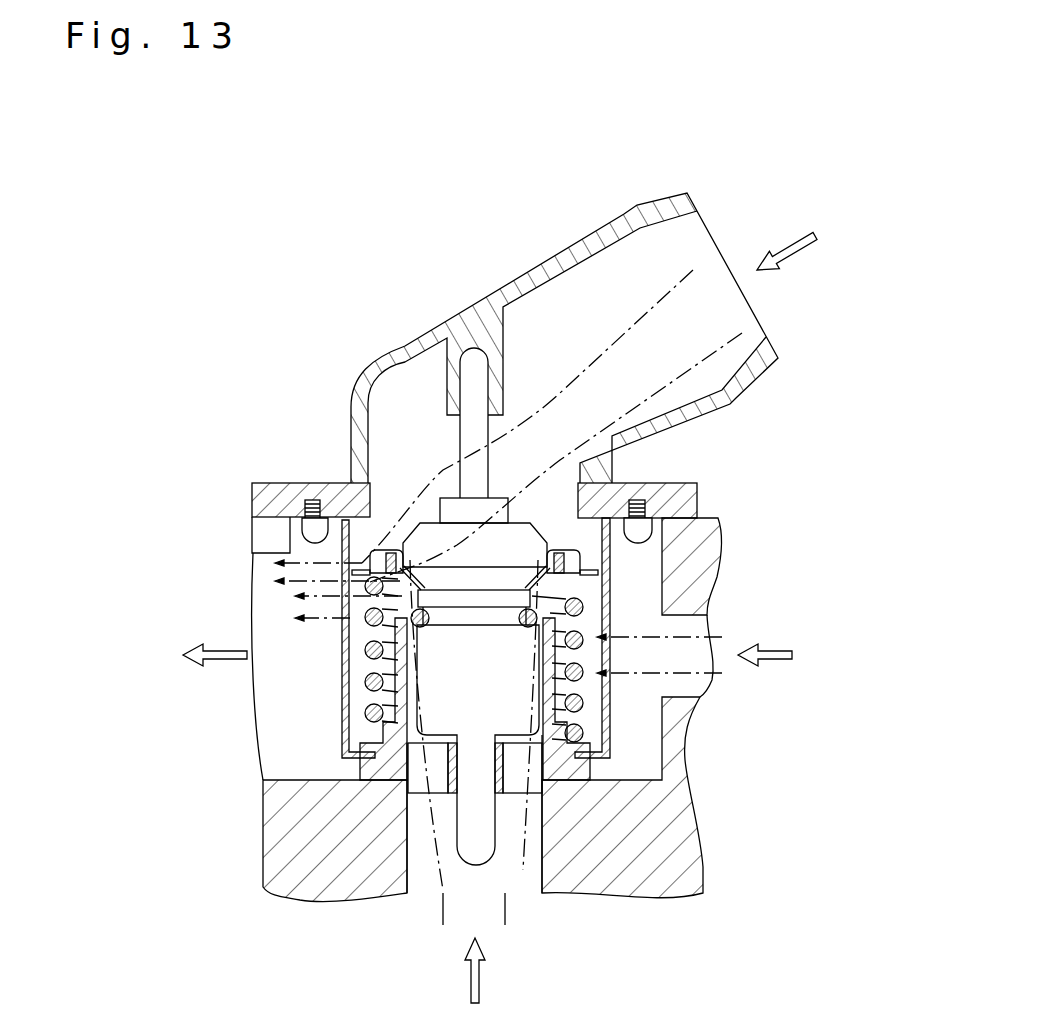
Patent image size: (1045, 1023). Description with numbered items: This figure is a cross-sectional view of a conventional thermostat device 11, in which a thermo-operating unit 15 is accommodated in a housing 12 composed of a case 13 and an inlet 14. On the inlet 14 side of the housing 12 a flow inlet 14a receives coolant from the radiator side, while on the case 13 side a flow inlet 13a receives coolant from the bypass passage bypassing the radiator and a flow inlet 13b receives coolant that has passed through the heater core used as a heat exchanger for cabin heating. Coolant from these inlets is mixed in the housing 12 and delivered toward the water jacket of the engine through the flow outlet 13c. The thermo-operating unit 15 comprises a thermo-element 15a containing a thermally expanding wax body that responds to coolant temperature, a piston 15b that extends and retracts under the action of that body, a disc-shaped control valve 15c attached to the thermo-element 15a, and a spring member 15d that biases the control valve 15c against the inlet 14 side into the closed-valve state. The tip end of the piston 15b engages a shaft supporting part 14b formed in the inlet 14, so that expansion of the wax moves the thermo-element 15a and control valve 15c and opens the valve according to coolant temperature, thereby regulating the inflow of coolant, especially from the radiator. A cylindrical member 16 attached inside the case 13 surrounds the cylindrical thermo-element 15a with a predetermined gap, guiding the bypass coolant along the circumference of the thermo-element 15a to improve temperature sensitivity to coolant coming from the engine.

The thermostat device 11 is at (356, 278).
The housing 12 is at (503, 598).
The case 13 is at (700, 830).
The flow inlet 13a is at (525, 888).
The flow inlet 13b is at (695, 683).
The flow outlet 13c is at (263, 608).
The inlet 14 is at (700, 415).
The flow inlet 14a is at (735, 313).
The shaft supporting part 14b is at (462, 372).
The thermo-operating unit 15 is at (390, 494).
The thermo-element 15a is at (438, 697).
The piston 15b is at (465, 428).
The control valve 15c is at (580, 552).
The spring member 15d is at (605, 702).
The cylindrical member 16 is at (405, 662).